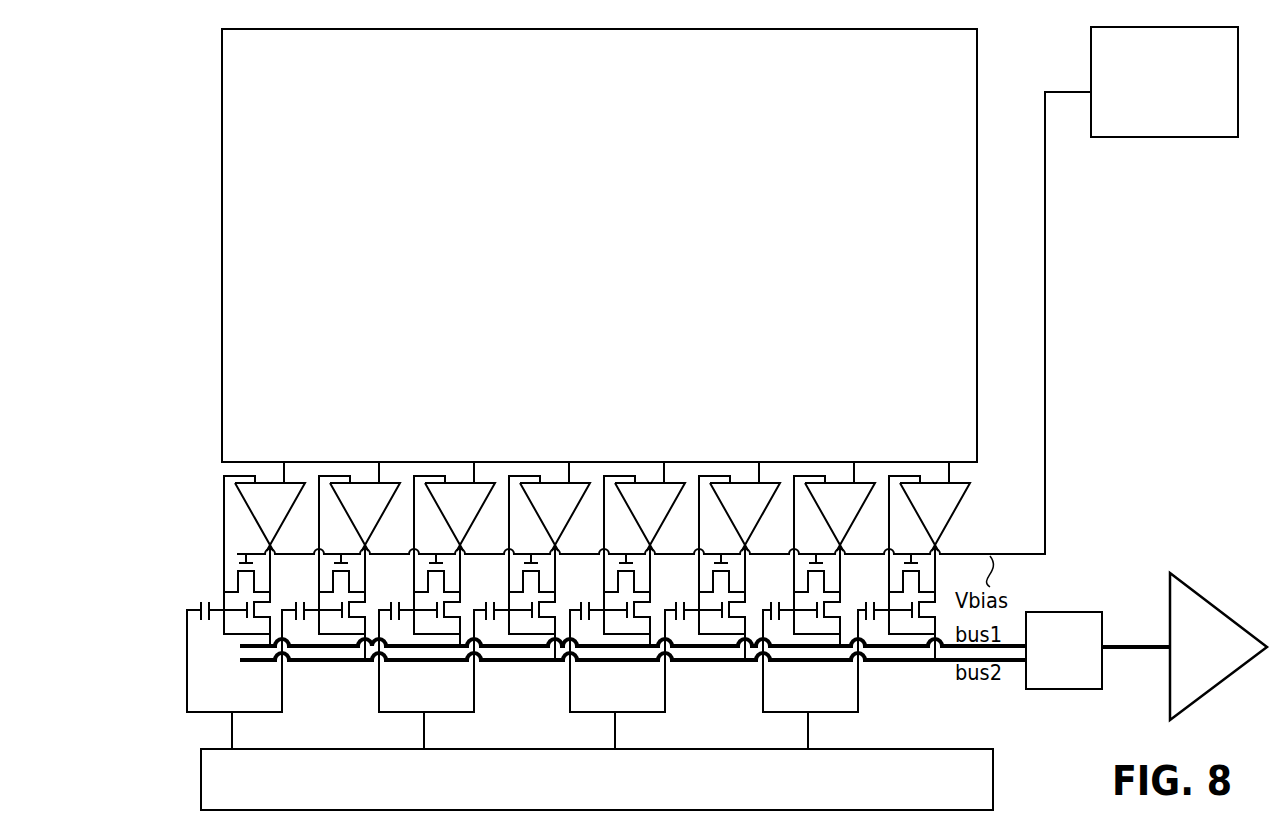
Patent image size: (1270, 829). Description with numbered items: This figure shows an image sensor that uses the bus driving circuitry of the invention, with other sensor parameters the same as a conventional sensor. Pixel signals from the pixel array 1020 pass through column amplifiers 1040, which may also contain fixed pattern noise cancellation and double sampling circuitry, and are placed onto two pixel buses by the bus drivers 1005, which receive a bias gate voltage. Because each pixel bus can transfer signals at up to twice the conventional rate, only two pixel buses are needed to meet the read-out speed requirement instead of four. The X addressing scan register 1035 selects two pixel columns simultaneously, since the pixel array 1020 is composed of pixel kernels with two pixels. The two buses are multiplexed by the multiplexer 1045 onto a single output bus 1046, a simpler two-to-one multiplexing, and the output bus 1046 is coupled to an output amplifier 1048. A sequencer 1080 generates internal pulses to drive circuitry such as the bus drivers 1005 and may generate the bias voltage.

The pixel array 1020 is at (590, 284).
The sequencer 1080 is at (1142, 106).
The column amplifiers 1040 is at (178, 475).
The bus drivers 1005 is at (178, 562).
The multiplexer (MUX) 1045 is at (1086, 677).
The output bus 1046 is at (1130, 649).
The output amplifier 1048 is at (1225, 690).
The X addressing scan register 1035 is at (901, 748).